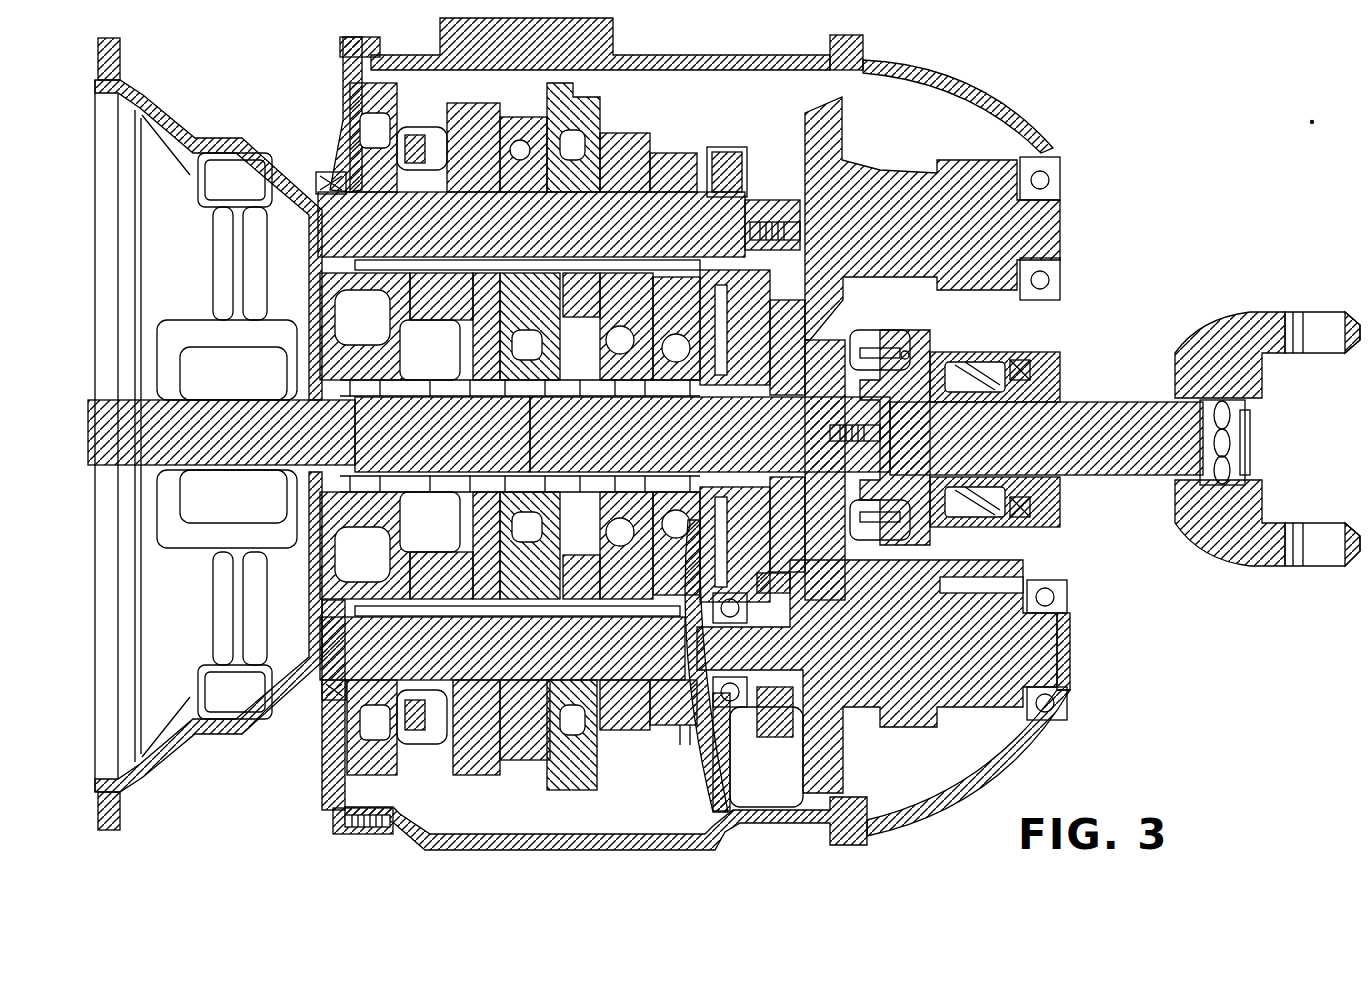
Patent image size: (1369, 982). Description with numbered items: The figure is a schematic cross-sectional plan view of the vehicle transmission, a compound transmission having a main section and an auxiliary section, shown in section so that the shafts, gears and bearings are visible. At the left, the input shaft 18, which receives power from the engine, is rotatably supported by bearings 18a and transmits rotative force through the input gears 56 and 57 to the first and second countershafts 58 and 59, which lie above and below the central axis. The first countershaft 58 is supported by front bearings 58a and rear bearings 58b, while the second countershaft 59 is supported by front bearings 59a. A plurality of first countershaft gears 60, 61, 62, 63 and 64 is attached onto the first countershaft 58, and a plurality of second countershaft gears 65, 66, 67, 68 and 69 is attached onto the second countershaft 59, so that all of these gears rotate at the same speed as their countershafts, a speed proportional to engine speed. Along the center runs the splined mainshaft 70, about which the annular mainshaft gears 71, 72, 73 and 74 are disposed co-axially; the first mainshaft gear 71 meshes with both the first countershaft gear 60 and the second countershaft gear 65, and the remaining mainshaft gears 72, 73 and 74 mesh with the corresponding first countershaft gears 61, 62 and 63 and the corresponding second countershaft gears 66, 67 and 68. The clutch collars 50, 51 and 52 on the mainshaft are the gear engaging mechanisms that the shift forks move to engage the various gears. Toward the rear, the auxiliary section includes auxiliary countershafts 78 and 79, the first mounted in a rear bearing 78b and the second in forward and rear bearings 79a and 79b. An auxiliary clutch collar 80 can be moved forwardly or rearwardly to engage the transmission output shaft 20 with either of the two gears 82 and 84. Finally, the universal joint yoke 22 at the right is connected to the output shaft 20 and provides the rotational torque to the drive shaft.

The input shaft 18 is at (205, 398).
The bearings 18a is at (442, 434).
The output shaft 20 is at (1046, 438).
The universal joint yoke 22 is at (1230, 318).
The clutch collar 50 is at (410, 475).
The clutch collar 51 is at (600, 478).
The clutch collar 52 is at (750, 478).
The input gear 56 is at (425, 380).
The input gear 57 is at (410, 505).
The first countershaft 58 is at (559, 231).
The front bearings 58a is at (330, 178).
The rear bearings 58b is at (730, 160).
The second countershaft 59 is at (502, 643).
The front bearings 59a is at (330, 722).
The first countershaft gear 60 is at (672, 168).
The first countershaft gear 61 is at (625, 160).
The first countershaft gear 62 is at (517, 130).
The first countershaft gear 63 is at (472, 112).
The first countershaft gear 64 is at (363, 90).
The second countershaft gear 65 is at (676, 722).
The second countershaft gear 66 is at (630, 735).
The second countershaft gear 67 is at (538, 770).
The second countershaft gear 68 is at (485, 765).
The second countershaft gear 69 is at (336, 800).
The mainshaft 70 is at (710, 434).
The first mainshaft gear 71 is at (673, 375).
The mainshaft gear 72 is at (623, 378).
The mainshaft gear 73 is at (523, 380).
The mainshaft gear 74 is at (480, 373).
The auxiliary countershaft 78 is at (905, 182).
The rear bearing 78b is at (1062, 178).
The auxiliary countershaft 79 is at (905, 700).
The forward bearing 79a is at (740, 705).
The rear bearing 79b is at (1067, 600).
The auxiliary clutch collar 80 is at (918, 405).
The gear 82 is at (893, 340).
The gear 84 is at (1040, 352).